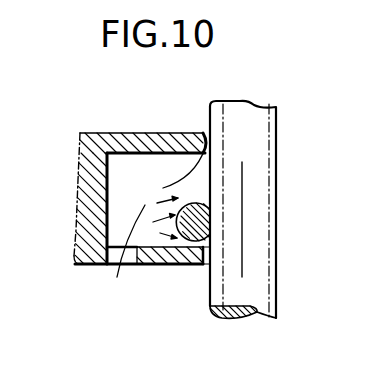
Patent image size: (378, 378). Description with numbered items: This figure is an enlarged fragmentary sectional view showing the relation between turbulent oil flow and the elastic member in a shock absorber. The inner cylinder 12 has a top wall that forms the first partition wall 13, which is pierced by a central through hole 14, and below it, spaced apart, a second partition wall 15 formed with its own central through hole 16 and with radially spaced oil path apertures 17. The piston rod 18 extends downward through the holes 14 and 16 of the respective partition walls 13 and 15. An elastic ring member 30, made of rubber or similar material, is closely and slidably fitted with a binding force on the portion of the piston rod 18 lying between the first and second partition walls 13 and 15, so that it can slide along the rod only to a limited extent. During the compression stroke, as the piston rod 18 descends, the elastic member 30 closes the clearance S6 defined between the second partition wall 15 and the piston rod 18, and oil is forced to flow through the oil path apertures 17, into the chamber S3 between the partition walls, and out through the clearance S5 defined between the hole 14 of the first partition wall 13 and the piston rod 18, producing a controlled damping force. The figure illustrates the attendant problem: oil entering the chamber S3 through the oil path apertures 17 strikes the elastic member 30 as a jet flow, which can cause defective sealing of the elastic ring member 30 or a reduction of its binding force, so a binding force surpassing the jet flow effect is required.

The inner cylinder 12 is at (94, 238).
The first partition wall 13 is at (118, 139).
The central through hole 14 is at (204, 133).
The second partition wall 15 is at (153, 258).
The central through hole 16 is at (207, 253).
The oil path apertures 17 is at (118, 258).
The piston rod 18 is at (260, 291).
The elastic ring member 30 is at (188, 201).
The chamber S3 is at (108, 190).
The clearance S5 is at (205, 148).
The clearance S6 is at (205, 256).